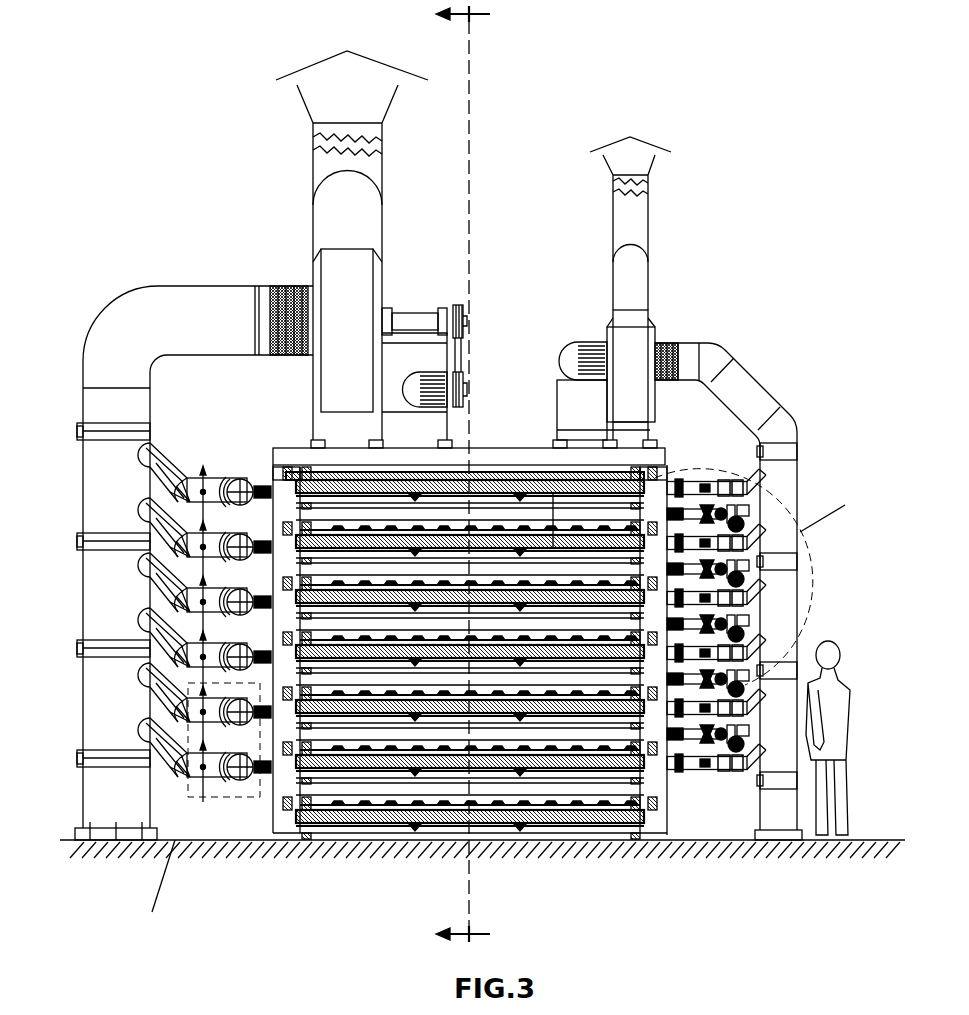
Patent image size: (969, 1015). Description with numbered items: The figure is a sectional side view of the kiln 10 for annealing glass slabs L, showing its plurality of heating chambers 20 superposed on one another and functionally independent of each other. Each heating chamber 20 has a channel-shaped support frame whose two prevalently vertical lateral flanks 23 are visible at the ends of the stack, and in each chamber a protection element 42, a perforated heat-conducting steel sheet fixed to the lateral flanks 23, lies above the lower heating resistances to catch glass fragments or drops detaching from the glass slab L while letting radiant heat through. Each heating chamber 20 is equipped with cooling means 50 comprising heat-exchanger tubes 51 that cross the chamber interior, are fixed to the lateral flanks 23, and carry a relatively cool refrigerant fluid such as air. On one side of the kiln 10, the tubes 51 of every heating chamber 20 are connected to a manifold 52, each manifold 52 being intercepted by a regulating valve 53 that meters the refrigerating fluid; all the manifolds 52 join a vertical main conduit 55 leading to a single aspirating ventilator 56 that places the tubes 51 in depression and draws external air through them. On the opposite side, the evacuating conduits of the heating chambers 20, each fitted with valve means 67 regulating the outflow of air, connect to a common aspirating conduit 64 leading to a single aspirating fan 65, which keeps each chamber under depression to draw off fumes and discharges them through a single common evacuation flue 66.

The kiln 10 is at (482, 471).
The cooling means 50 is at (347, 249).
The aspirating ventilator 56 is at (334, 290).
The main conduit 55 is at (113, 457).
The regulating valve 53 is at (203, 466).
The manifold 52 is at (240, 478).
The lateral flanks 23 is at (280, 498).
The heat-exchanger tubes 51 is at (478, 470).
The protection element 42 is at (497, 530).
The glass slab L is at (553, 520).
The heating chambers 20 is at (454, 705).
The evacuation flue 66 is at (637, 220).
The aspirating fan 65 is at (633, 343).
The aspirating conduit 64 is at (800, 480).
The valve means 67 is at (747, 598).